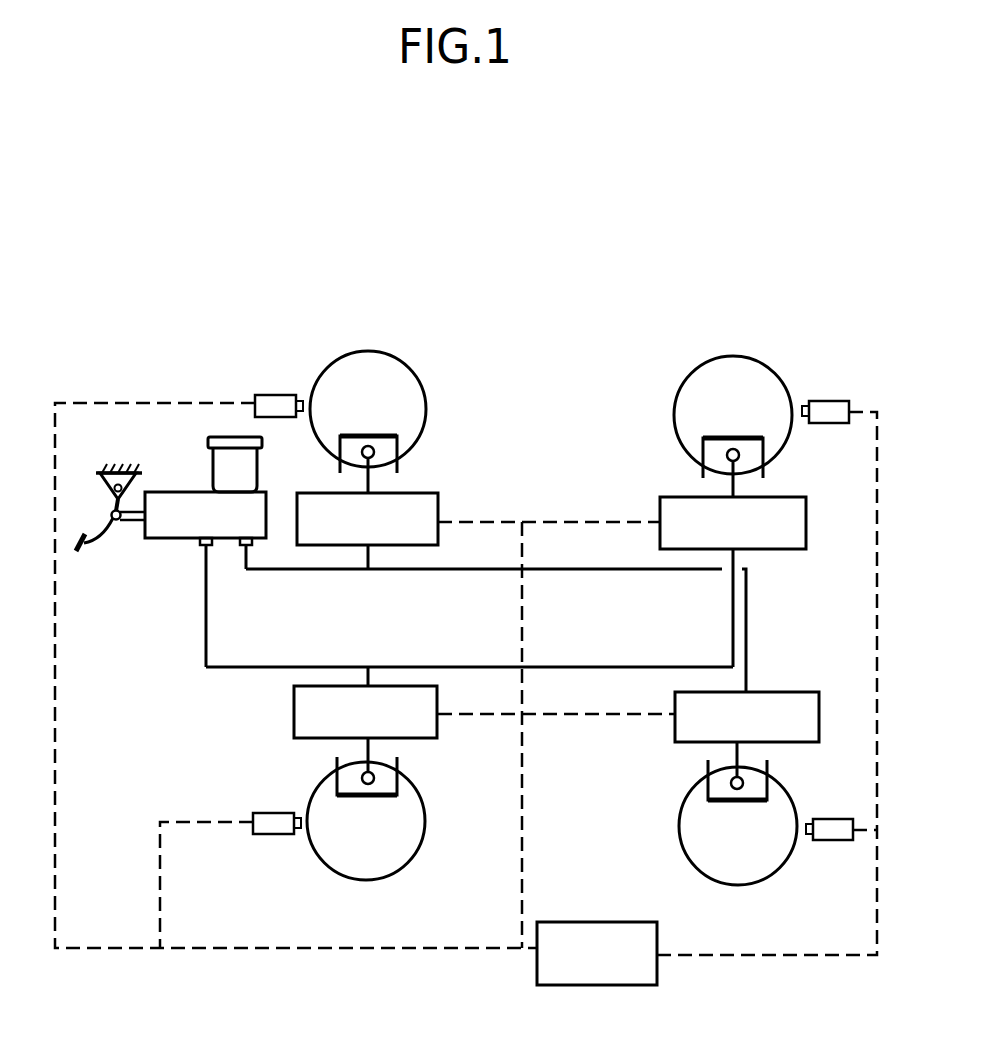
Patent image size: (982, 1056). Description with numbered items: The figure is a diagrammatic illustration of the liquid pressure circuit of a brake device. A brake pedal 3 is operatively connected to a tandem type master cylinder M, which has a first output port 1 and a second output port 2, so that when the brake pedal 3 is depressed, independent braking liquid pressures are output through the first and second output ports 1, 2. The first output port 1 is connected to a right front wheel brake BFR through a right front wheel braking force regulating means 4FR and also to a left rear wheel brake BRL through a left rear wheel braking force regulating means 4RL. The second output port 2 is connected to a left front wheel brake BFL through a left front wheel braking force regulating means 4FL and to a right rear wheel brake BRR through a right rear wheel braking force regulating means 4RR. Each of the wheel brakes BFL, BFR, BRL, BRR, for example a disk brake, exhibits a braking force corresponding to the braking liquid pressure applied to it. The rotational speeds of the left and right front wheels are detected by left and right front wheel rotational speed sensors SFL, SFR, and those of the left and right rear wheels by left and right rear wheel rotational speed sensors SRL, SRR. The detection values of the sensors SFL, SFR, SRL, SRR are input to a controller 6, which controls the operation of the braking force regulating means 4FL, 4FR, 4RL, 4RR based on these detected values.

The master cylinder M is at (185, 528).
The first output port 1 is at (246, 546).
The second output port 2 is at (207, 545).
The brake pedal 3 is at (74, 548).
The right front wheel braking force regulating means 4FR is at (364, 540).
The right rear wheel braking force regulating means 4RR is at (732, 545).
The left front wheel braking force regulating means 4FL is at (363, 734).
The left rear wheel braking force regulating means 4RL is at (746, 738).
The right front wheel brake BFR is at (397, 450).
The right rear wheel brake BRR is at (708, 450).
The left front wheel brake BFL is at (397, 760).
The left rear wheel brake BRL is at (716, 773).
The right front wheel rotational speed sensor SFR is at (267, 403).
The right rear wheel rotational speed sensor SRR is at (827, 403).
The left front wheel rotational speed sensor SFL is at (266, 821).
The left rear wheel rotational speed sensor SRL is at (825, 826).
The controller 6 is at (606, 973).